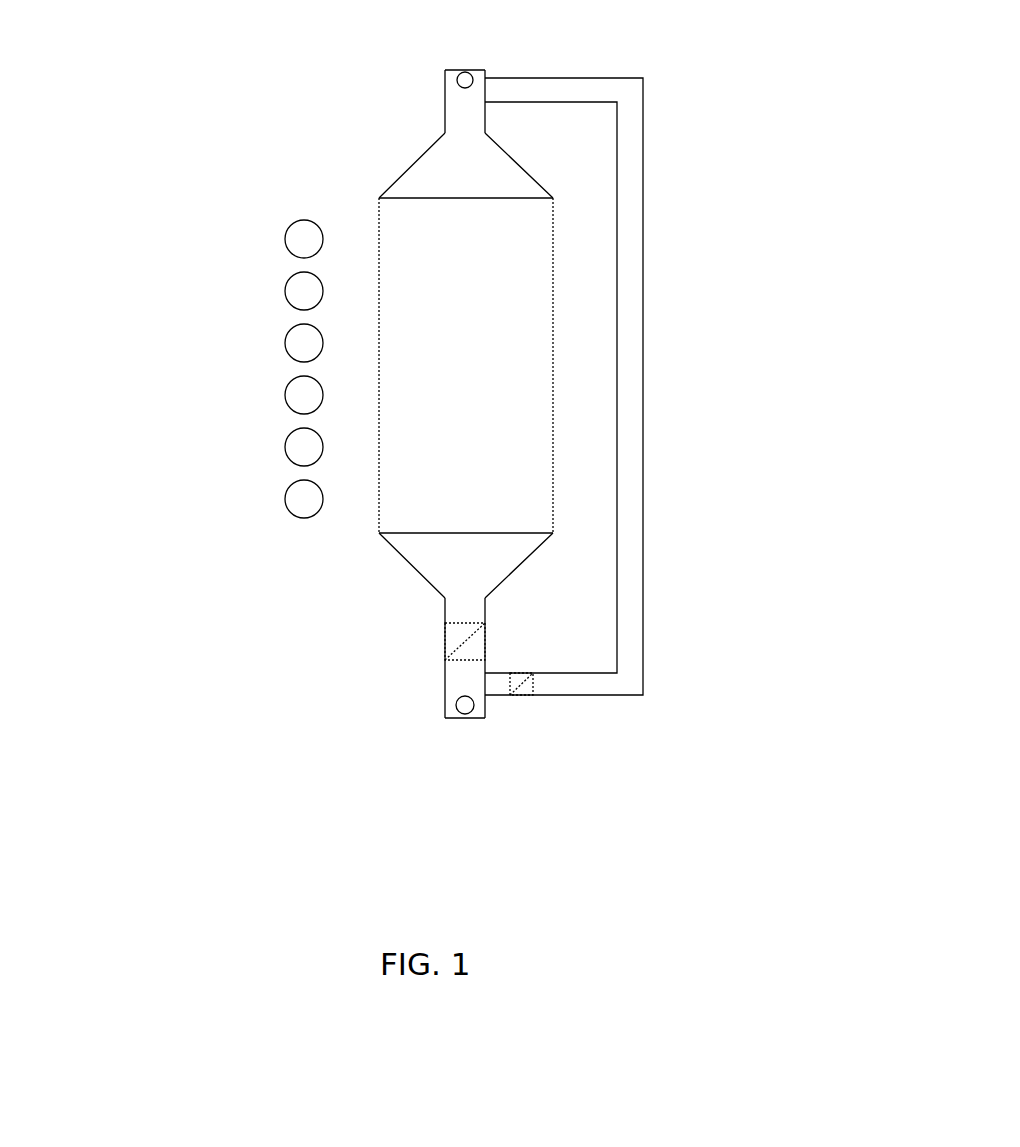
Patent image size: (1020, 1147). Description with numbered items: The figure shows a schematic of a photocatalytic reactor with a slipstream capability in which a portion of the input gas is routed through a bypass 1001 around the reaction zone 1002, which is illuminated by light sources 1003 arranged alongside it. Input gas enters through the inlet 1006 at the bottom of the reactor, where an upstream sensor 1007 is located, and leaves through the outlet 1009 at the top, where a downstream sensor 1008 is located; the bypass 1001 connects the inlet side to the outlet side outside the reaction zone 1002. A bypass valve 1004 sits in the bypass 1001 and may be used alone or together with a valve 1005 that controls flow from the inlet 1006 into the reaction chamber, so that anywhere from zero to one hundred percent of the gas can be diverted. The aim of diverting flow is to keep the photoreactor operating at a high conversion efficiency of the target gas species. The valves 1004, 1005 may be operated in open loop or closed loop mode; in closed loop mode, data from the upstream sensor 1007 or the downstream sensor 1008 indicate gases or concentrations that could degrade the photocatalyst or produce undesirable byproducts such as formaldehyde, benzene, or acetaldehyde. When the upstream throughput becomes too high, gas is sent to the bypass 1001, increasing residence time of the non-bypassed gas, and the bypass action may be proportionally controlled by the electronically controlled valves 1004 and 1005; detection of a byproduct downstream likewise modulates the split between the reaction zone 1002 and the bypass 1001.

The bypass 1001 is at (650, 352).
The reaction zone 1002 is at (379, 500).
The light sources 1003 is at (273, 344).
The bypass valve 1004 is at (525, 709).
The valve 1005 is at (435, 642).
The inlet 1006 is at (435, 689).
The upstream sensor 1007 is at (447, 718).
The downstream sensor 1008 is at (447, 77).
The outlet 1009 is at (440, 114).